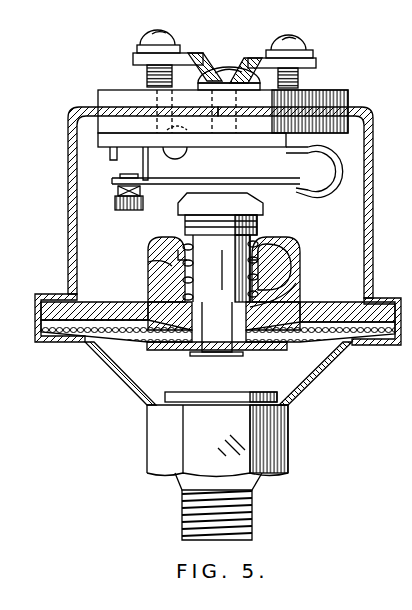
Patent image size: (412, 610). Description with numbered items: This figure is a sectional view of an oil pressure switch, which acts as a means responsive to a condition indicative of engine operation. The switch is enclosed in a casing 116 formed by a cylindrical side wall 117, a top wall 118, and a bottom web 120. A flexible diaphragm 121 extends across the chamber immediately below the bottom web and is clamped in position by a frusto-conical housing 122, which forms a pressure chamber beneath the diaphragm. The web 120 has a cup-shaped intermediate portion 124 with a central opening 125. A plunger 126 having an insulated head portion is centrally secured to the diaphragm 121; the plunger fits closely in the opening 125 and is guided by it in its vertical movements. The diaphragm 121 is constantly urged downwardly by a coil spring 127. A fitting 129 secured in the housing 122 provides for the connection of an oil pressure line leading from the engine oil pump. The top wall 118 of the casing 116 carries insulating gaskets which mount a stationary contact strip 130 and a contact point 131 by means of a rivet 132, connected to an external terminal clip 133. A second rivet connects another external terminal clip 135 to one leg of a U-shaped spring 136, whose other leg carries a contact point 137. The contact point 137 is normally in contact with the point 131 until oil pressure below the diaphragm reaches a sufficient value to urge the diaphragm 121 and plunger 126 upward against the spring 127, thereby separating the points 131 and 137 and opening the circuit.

The casing 116 is at (366, 242).
The cylindrical side wall 117 is at (68, 219).
The top wall 118 is at (85, 105).
The bottom web 120 is at (127, 298).
The flexible diaphragm 121 is at (335, 342).
The frusto-conical housing 122 is at (326, 370).
The cup-shaped intermediate portion 124 is at (291, 266).
The central opening 125 is at (274, 240).
The plunger 126 is at (292, 287).
The coil spring 127 is at (150, 263).
The fitting 129 is at (148, 440).
The stationary contact strip 130 is at (118, 180).
The contact point 131 is at (115, 200).
The rivet 132 is at (232, 70).
The external terminal clip 133 is at (313, 62).
The external terminal clip 135 is at (137, 50).
The U-shaped spring 136 is at (305, 206).
The contact point 137 is at (141, 195).